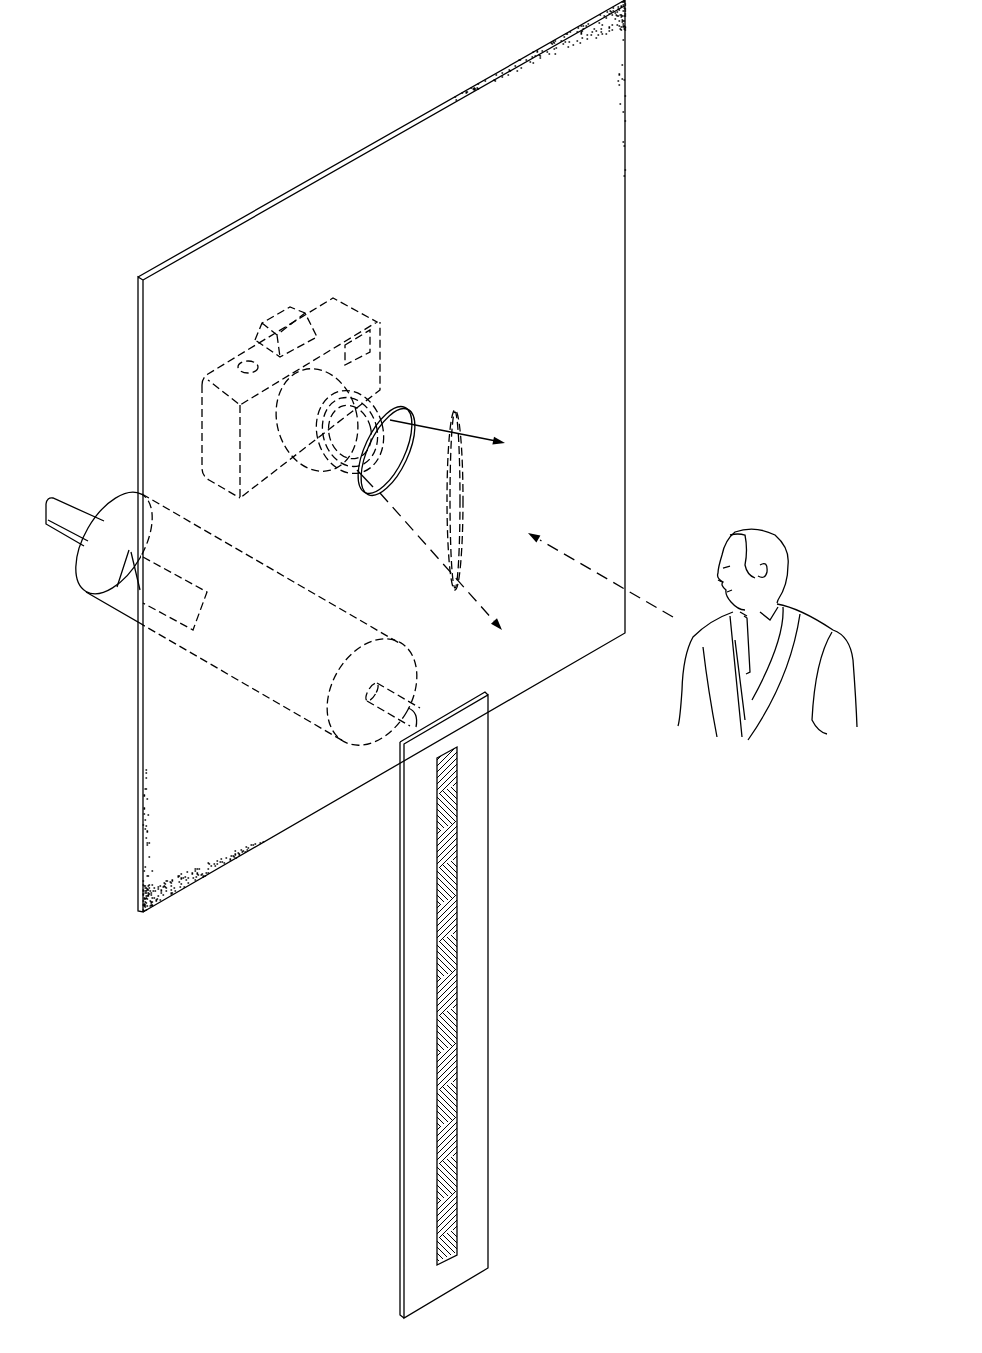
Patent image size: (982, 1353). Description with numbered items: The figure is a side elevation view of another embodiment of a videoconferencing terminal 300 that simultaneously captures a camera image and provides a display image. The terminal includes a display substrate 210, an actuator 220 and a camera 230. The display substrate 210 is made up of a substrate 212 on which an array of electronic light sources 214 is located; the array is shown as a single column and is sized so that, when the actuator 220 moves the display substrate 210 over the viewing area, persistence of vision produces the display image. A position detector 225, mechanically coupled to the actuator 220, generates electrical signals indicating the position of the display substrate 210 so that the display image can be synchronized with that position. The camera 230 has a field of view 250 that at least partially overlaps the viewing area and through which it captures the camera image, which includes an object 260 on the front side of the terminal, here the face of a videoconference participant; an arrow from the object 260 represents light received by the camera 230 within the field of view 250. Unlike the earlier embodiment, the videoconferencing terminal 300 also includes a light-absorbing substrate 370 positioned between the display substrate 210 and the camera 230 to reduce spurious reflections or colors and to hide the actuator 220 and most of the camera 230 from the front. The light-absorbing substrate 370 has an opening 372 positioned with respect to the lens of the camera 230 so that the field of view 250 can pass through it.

The videoconferencing terminal 300 is at (181, 150).
The light-absorbing substrate 370 is at (137, 797).
The camera 230 is at (222, 352).
The opening 372 is at (362, 493).
The field of view 250 is at (455, 410).
The actuator 220 is at (122, 505).
The position detector 225 is at (132, 585).
The display substrate 210 is at (508, 1049).
The substrate 212 is at (398, 1070).
The array of electronic light sources 214 is at (458, 787).
The object 260 is at (757, 527).